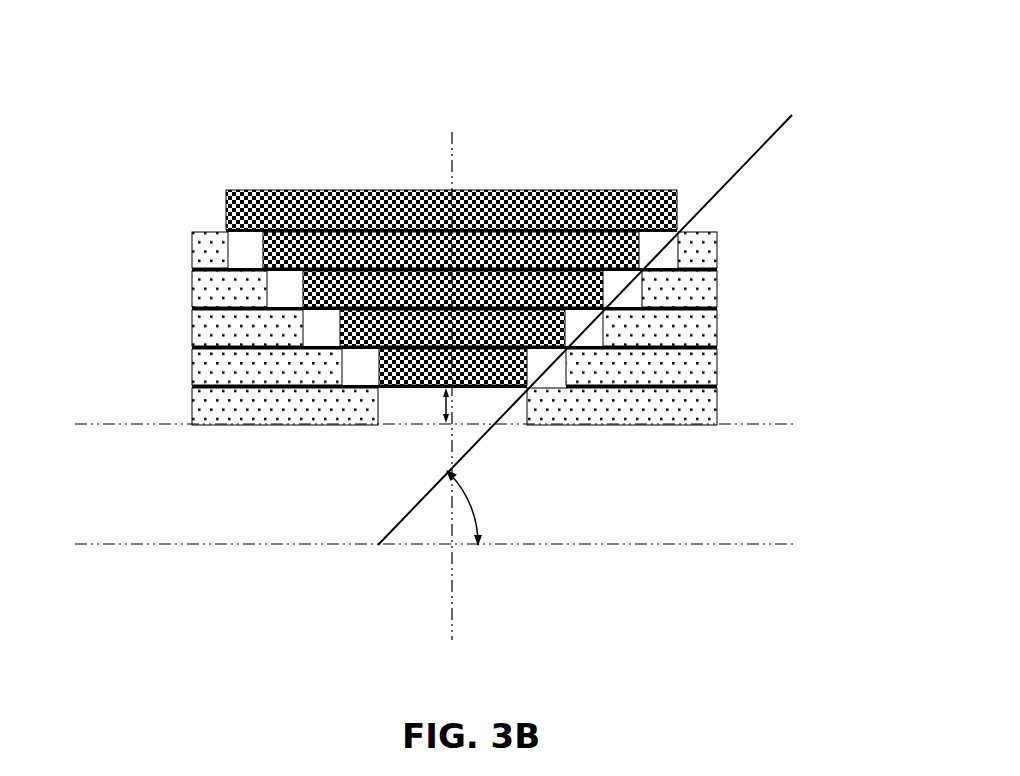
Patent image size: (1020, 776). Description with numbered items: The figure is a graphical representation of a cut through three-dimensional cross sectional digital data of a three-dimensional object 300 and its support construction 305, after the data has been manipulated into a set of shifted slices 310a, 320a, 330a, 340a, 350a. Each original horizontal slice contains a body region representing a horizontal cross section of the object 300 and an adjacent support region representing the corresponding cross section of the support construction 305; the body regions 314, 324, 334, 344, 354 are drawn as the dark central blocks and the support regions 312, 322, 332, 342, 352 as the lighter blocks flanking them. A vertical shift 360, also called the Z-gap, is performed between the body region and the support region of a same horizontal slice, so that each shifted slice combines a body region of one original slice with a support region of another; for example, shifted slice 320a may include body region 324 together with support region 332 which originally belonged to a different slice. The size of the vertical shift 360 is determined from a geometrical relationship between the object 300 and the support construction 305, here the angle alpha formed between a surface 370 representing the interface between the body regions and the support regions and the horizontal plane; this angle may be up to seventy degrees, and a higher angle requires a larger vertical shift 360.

The 3D object 300 is at (464, 280).
The support construction 305 is at (703, 446).
The shifted slice 310a is at (469, 420).
The support region 312 is at (210, 412).
The body region 314 is at (437, 365).
The shifted slice 320a is at (469, 401).
The support region 322 is at (210, 375).
The body region 324 is at (379, 327).
The shifted slice 330a is at (461, 373).
The support region 332 is at (200, 327).
The body region 334 is at (330, 286).
The shifted slice 340a is at (461, 353).
The support region 342 is at (200, 287).
The body region 344 is at (552, 248).
The shifted slice 350a is at (461, 196).
The support region 352 is at (200, 245).
The body region 354 is at (565, 206).
The vertical shift 360 is at (453, 408).
The surface 370 is at (398, 526).